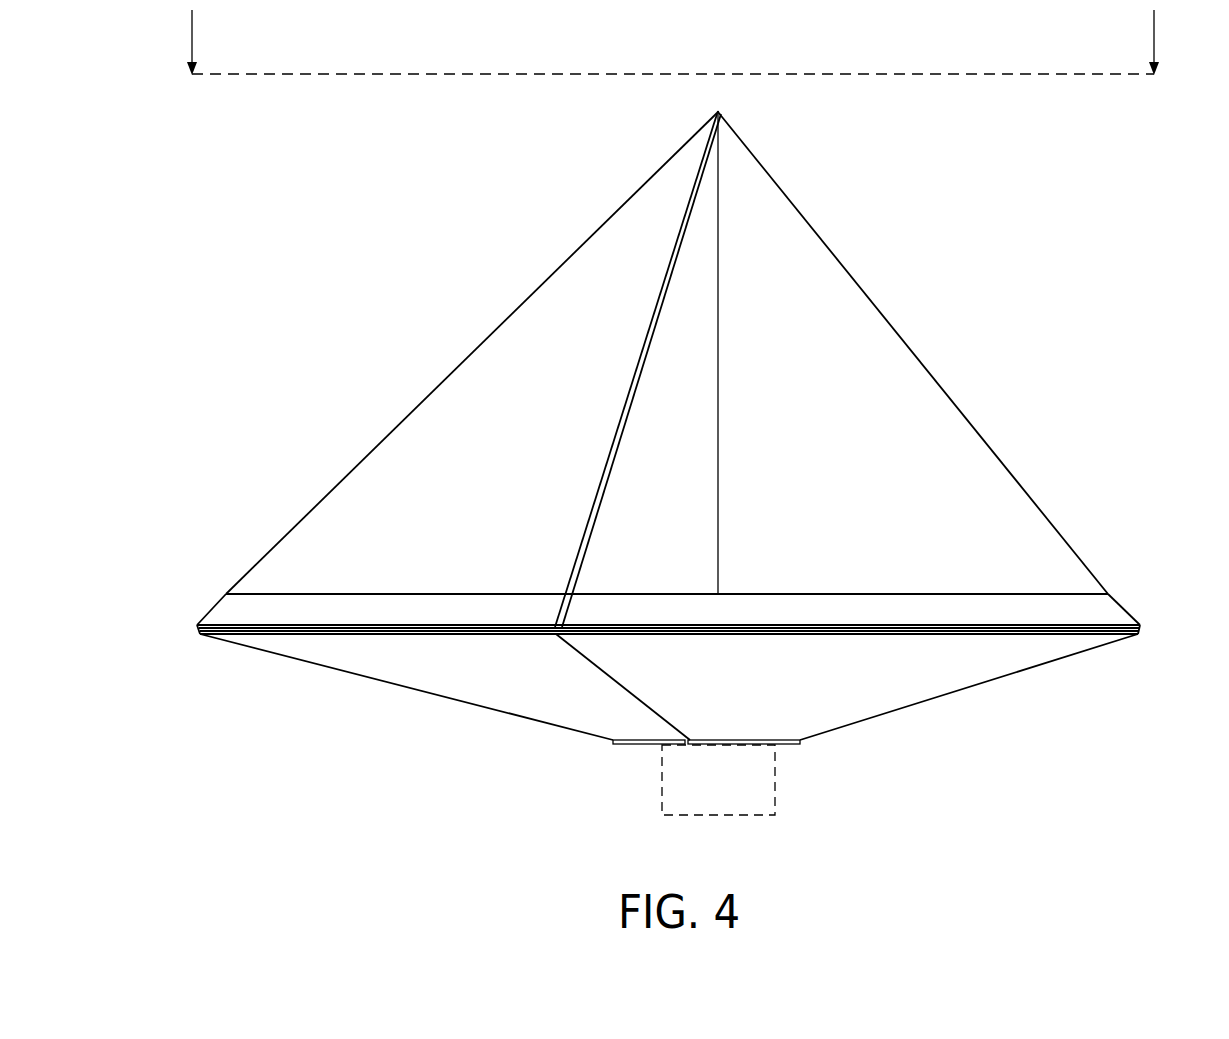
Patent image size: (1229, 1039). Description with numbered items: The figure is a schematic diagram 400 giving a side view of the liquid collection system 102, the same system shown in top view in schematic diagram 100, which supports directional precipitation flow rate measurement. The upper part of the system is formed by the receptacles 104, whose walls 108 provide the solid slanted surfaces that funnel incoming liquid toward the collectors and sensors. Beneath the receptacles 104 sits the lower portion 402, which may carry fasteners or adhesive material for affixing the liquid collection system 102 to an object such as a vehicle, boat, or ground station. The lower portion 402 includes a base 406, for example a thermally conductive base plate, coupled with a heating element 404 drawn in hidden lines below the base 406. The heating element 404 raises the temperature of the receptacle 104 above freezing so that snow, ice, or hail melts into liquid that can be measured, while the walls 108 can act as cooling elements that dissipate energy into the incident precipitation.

The schematic diagram 100 is at (930, 74).
The liquid collection system 102 is at (720, 110).
The receptacle 104 is at (820, 547).
The walls 108 is at (932, 375).
The schematic diagram 400 is at (1108, 790).
The lower portion 402 is at (880, 713).
The heating element 404 is at (773, 778).
The base 406 is at (797, 745).